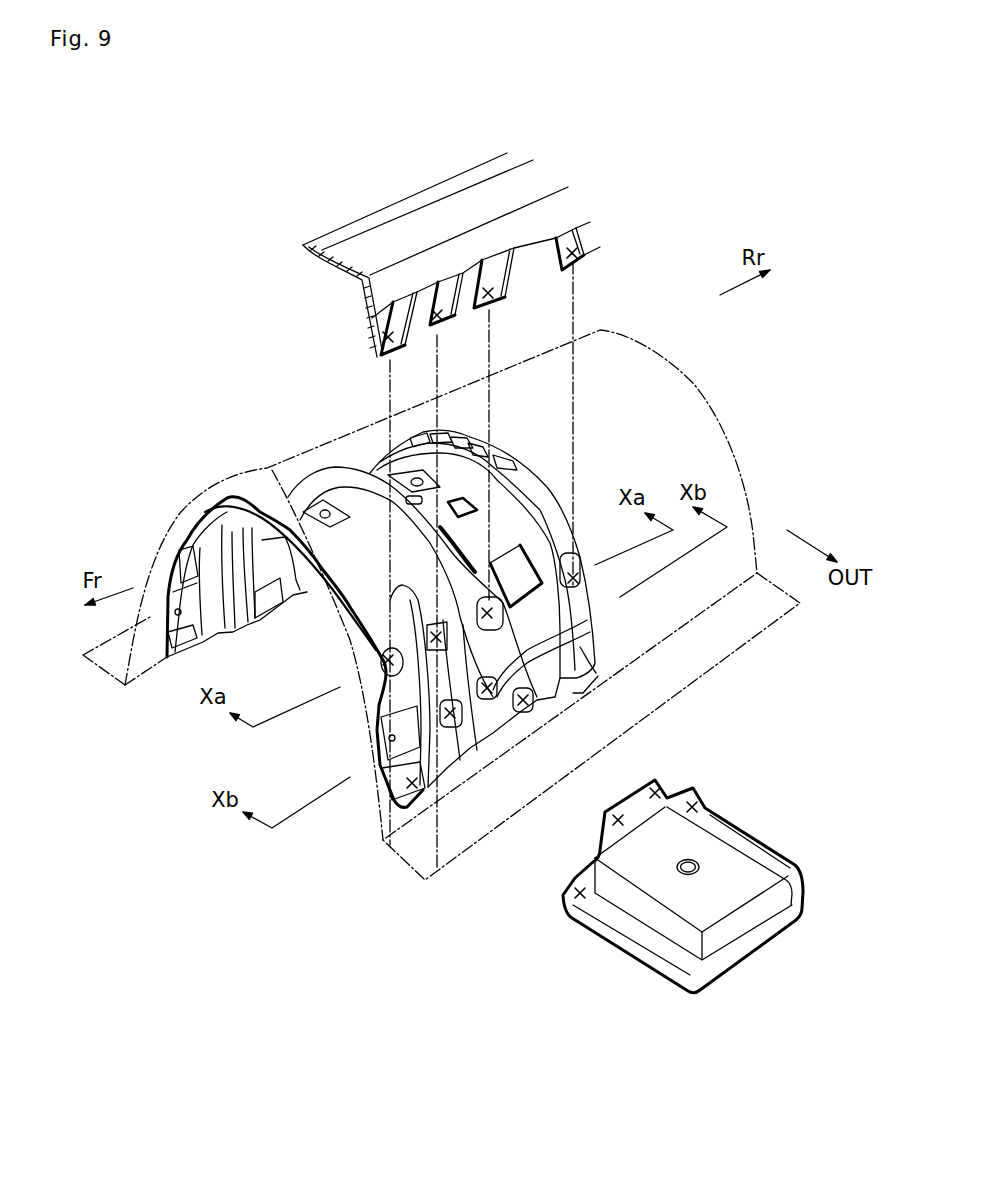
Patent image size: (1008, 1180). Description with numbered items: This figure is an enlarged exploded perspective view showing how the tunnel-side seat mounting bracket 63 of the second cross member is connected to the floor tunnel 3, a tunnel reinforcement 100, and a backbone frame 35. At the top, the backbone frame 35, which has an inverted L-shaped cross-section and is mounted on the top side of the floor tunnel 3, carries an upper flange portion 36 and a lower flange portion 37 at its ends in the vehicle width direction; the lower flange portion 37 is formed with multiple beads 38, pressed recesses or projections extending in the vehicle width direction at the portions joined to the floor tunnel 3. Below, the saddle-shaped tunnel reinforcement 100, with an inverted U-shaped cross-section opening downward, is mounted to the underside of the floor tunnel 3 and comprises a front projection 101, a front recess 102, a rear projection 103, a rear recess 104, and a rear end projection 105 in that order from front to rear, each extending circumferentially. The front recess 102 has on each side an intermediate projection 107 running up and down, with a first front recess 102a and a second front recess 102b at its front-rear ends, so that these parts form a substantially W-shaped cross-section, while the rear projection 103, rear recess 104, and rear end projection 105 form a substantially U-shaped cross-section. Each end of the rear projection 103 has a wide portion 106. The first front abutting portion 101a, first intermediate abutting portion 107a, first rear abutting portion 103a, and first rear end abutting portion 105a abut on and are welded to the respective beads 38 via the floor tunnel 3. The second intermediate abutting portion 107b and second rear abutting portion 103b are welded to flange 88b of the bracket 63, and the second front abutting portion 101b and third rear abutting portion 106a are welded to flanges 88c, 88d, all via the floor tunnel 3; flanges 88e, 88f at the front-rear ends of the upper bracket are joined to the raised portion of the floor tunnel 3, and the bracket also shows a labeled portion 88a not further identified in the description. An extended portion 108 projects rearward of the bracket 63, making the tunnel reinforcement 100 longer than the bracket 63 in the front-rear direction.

The floor tunnel 3 is at (690, 403).
The backbone frame 35 is at (542, 183).
The upper flange portion 36 is at (480, 163).
The lower flange portion 37 is at (593, 231).
The bead 38 is at (587, 263).
The tunnel-side seat mounting bracket 63 is at (670, 868).
The bracket bottom plate 88a is at (750, 943).
The flange 88b is at (608, 805).
The flange 88c is at (572, 908).
The flange 88d is at (700, 797).
The flange 88e is at (652, 953).
The flange 88f is at (775, 855).
The tunnel reinforcement 100 is at (190, 517).
The front projection 101 is at (230, 490).
The first front abutting portion 101a is at (385, 663).
The second front abutting portion 101b is at (410, 786).
The front recess 102 is at (297, 503).
The first front recess 102a is at (434, 785).
The second front recess 102b is at (465, 752).
The rear projection 103 is at (320, 470).
The first rear abutting portion 103a is at (517, 548).
The second rear abutting portion 103b is at (607, 614).
The rear recess 104 is at (375, 478).
The rear end projection 105 is at (383, 460).
The first rear end abutting portion 105a is at (573, 573).
The wide portion 106 is at (525, 720).
The third rear abutting portion 106a is at (580, 647).
The intermediate projection 107 is at (463, 765).
The first intermediate abutting portion 107a is at (385, 655).
The second intermediate abutting portion 107b is at (390, 736).
The extended portion 108 is at (576, 694).